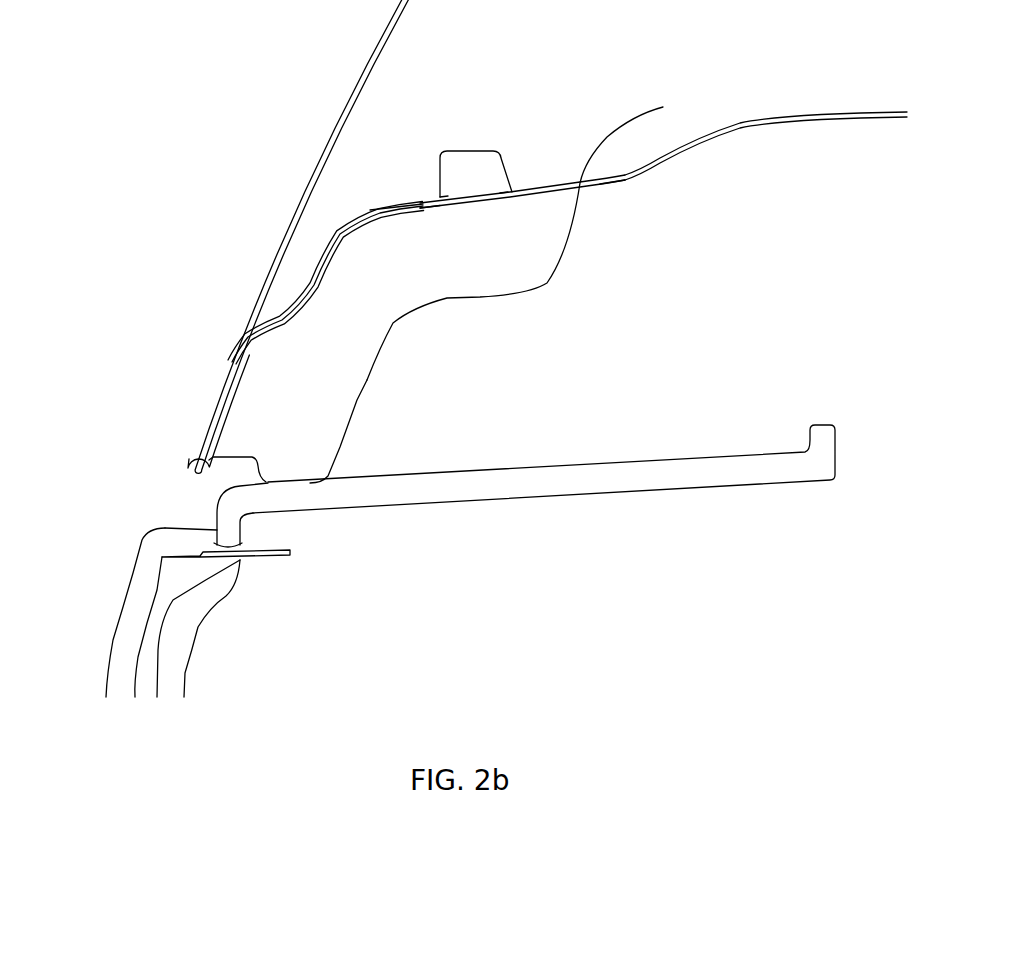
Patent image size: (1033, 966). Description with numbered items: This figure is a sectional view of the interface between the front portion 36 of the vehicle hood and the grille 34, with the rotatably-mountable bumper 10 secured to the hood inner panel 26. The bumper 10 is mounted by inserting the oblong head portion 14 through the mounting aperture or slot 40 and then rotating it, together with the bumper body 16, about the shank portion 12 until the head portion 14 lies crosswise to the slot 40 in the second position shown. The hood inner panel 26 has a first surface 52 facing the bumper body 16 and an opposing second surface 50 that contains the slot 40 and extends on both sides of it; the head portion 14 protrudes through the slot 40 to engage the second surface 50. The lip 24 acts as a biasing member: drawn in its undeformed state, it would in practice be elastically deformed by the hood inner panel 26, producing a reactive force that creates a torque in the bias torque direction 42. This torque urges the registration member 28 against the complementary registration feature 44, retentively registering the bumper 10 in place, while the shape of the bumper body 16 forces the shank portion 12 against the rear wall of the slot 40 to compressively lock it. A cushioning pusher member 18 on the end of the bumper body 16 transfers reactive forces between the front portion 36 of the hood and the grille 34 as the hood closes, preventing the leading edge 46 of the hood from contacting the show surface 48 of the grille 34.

The rotatably-mountable bumper 10 is at (515, 350).
The shank portion 12 is at (513, 190).
The head portion 14 is at (485, 163).
The bumper body 16 is at (412, 268).
The cushioning pusher member 18 is at (308, 482).
The lip 24 is at (532, 237).
The hood inner panel 26 is at (713, 138).
The registration member 28 is at (237, 350).
The grille 34 is at (137, 627).
The front portion of the vehicle hood 36 is at (320, 152).
The mounting aperture or slot 40 is at (420, 207).
The bias torque direction 42 is at (548, 297).
The registration feature (third surface) 44 is at (235, 380).
The leading edge of the hood 46 is at (192, 477).
The show surface of the grille 48 is at (167, 528).
The second surface 50 is at (370, 210).
The first surface 52 is at (610, 183).